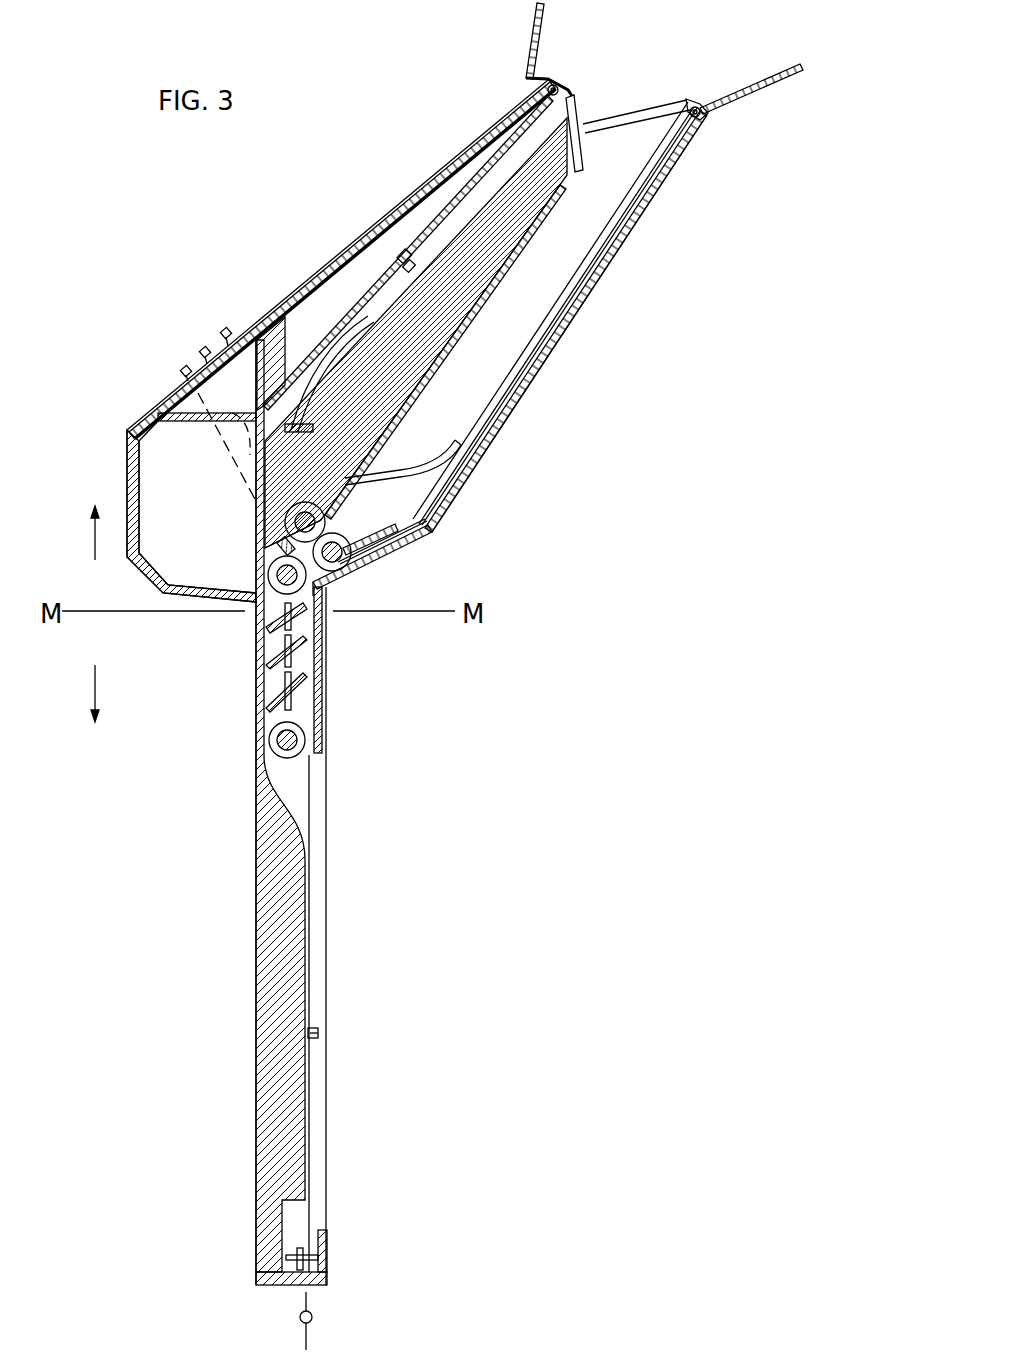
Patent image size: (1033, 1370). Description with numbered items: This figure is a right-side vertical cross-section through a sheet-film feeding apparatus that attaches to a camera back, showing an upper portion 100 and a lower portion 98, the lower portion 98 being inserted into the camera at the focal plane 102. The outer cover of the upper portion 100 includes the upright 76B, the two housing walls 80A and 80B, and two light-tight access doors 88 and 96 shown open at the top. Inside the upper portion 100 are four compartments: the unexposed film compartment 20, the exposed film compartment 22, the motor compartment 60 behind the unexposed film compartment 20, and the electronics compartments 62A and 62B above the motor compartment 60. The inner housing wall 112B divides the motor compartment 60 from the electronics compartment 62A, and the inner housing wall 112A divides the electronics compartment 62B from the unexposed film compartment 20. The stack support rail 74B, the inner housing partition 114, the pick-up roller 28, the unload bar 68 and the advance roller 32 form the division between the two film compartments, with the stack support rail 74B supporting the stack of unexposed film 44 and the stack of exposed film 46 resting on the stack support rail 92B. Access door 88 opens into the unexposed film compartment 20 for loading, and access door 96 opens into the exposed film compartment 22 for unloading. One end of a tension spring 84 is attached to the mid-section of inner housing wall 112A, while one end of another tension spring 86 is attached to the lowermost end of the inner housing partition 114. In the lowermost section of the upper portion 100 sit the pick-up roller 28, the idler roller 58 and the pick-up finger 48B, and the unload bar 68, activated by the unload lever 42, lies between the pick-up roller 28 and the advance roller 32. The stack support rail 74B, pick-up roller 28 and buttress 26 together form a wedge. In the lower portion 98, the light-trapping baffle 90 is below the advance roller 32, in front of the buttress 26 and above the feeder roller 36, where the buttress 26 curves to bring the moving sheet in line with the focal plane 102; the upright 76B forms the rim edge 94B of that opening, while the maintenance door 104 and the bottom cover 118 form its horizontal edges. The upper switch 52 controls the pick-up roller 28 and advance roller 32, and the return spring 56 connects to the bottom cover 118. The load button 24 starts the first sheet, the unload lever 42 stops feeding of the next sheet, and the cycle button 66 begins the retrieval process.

The unexposed film compartment 20 is at (487, 190).
The exposed film compartment 22 is at (567, 232).
The load button 24 is at (201, 352).
The buttress 26 is at (268, 827).
The pick-up roller 28 is at (318, 518).
The advance roller 32 is at (330, 593).
The feeder roller 36 is at (285, 738).
The unload lever 42 is at (182, 371).
The stack of unexposed film 44 is at (290, 483).
The stack of exposed film 46 is at (503, 383).
The pick-up finger 48B is at (352, 548).
The upper switch 52 is at (318, 1033).
The return spring 56 is at (317, 1245).
The idler roller 58 is at (353, 563).
The motor compartment 60 is at (138, 446).
The electronics compartment 62A is at (267, 328).
The electronics compartment 62B is at (300, 318).
The cycle button 66 is at (222, 331).
The unload bar 68 is at (282, 547).
The stack support rail 74B is at (550, 205).
The upright 76B is at (498, 123).
The housing wall 80A is at (130, 487).
The housing wall 80B is at (543, 350).
The tension spring 84 is at (330, 350).
The tension spring 86 is at (420, 473).
The access door 88 is at (530, 34).
The light-trapping baffle 90 is at (292, 650).
The stack support rail 92B is at (583, 272).
The rim edge 94B is at (315, 892).
The access door 96 is at (768, 93).
The lower portion 98 is at (104, 678).
The upper portion 100 is at (97, 552).
The focal plane 102 is at (300, 1318).
The maintenance door 104 is at (318, 623).
The inner housing wall 112A is at (407, 247).
The inner housing wall 112B is at (247, 453).
The inner housing partition 114 is at (487, 297).
The bottom cover 118 is at (328, 1273).